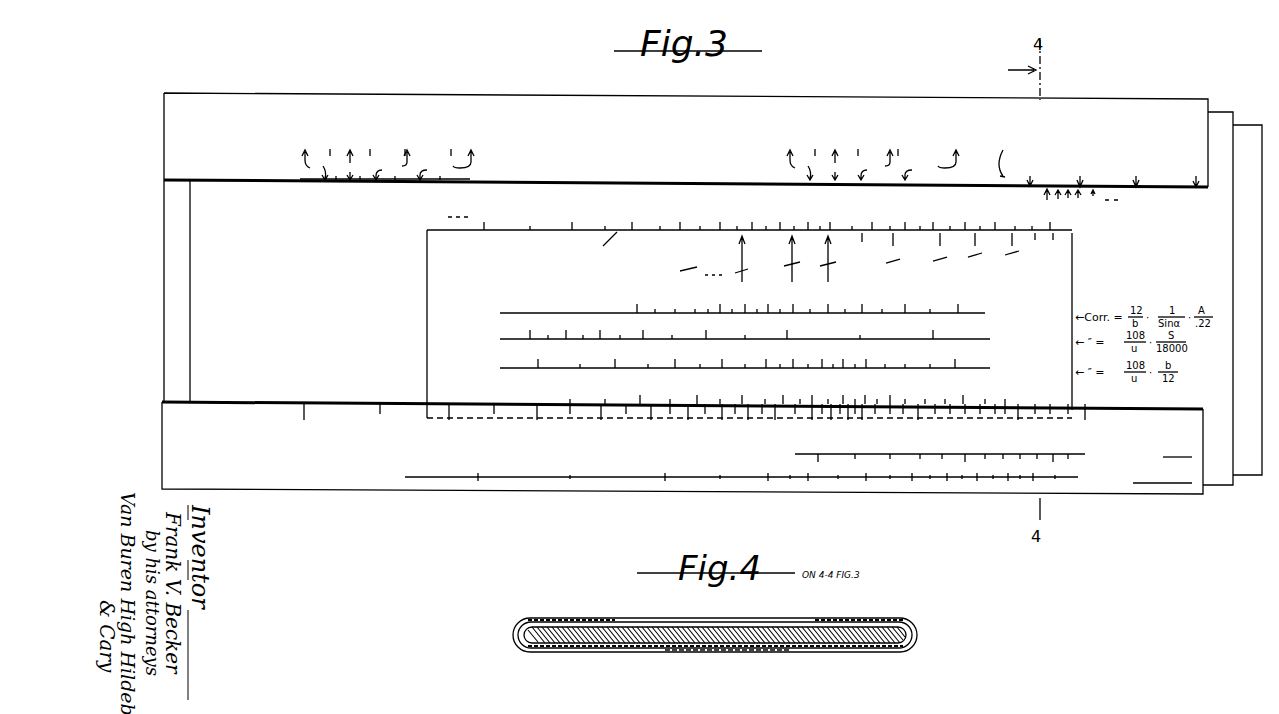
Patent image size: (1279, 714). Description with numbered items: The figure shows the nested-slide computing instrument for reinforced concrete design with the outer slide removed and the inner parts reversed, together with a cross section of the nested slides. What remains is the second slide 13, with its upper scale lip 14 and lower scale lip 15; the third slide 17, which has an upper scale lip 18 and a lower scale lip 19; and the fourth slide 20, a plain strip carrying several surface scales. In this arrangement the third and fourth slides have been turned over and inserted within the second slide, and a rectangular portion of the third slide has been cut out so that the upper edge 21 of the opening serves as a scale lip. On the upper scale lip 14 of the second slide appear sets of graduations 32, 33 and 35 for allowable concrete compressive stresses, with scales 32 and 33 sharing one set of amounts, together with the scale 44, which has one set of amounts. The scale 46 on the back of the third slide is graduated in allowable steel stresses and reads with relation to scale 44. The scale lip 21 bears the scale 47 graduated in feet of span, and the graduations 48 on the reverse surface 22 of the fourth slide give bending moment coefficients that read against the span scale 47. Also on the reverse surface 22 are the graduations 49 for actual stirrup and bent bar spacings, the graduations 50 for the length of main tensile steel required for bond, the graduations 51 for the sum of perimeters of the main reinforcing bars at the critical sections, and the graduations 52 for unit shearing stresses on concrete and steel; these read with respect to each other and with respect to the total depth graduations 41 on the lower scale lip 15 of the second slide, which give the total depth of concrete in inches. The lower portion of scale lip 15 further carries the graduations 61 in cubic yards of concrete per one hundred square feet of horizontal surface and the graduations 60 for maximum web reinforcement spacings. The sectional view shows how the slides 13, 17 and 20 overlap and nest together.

In FIG. 3, the second slide 13 is at (1180, 106).
In FIG. 4, the second slide 13 is at (520, 641).
In FIG. 3, the third slide 17 is at (1218, 115).
In FIG. 4, the third slide 17 is at (640, 625).
In FIG. 3, the fourth slide 20 is at (1243, 129).
In FIG. 4, the fourth slide 20 is at (741, 627).
In FIG. 4, the upper scale lip 14 is at (588, 618).
In FIG. 4, the lower scale lip 15 is at (832, 620).
In FIG. 4, the upper scale lip 18 is at (788, 650).
In FIG. 4, the lower scale lip 19 is at (662, 648).
In FIG. 3, the upper edge of the opening 21 is at (610, 250).
In FIG. 3, the reverse surface 22 is at (455, 282).
In FIG. 3, the graduations 32 is at (478, 161).
In FIG. 3, the graduations 33 is at (430, 178).
In FIG. 3, the graduations 35 is at (750, 165).
In FIG. 3, the graduations 41 is at (213, 431).
In FIG. 3, the graduations 44 is at (1003, 142).
In FIG. 3, the graduated scale 46 is at (1145, 207).
In FIG. 3, the graduated scale 47 is at (1060, 225).
In FIG. 3, the graduations 48 is at (1024, 253).
In FIG. 3, the graduations 49 is at (1018, 306).
In FIG. 3, the graduations 50 is at (1020, 335).
In FIG. 3, the graduations 51 is at (1022, 364).
In FIG. 3, the graduations 52 is at (1018, 397).
In FIG. 3, the graduations 60 is at (1125, 450).
In FIG. 3, the graduations 61 is at (362, 475).